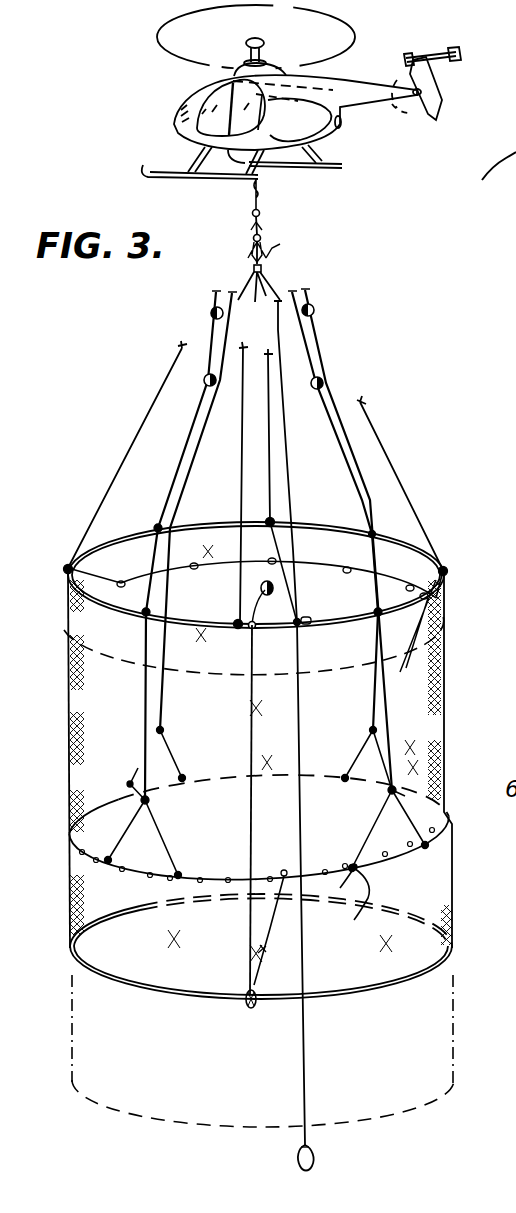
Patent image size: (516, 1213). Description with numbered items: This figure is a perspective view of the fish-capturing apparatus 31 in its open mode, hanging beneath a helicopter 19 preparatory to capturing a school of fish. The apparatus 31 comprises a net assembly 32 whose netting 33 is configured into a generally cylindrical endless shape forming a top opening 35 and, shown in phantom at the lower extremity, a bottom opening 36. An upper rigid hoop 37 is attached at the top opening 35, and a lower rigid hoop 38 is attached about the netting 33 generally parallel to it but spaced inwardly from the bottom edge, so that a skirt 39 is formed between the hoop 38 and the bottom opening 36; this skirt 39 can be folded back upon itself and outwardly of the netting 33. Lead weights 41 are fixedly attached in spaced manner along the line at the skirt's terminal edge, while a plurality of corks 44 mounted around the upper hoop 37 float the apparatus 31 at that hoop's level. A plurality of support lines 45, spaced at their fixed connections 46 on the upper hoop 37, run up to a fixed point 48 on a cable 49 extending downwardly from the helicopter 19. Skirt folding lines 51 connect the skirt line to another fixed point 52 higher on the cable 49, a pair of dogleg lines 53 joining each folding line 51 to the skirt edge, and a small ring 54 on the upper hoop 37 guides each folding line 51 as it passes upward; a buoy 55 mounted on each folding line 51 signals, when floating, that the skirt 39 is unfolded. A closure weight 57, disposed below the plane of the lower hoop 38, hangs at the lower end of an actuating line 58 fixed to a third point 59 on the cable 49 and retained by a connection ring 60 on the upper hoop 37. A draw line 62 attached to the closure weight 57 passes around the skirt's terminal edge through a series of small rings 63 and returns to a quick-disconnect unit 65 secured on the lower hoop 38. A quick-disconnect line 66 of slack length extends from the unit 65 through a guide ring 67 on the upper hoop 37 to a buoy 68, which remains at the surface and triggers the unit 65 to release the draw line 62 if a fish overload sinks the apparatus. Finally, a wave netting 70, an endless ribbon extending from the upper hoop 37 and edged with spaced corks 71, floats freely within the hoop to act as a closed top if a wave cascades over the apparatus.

The helicopter 19 is at (176, 123).
The apparatus 31 is at (410, 460).
The net assembly 32 is at (424, 714).
The netting 33 is at (72, 690).
The top opening 35 is at (122, 564).
The bottom opening 36 is at (205, 1125).
The upper rigid hoop 37 is at (76, 625).
The lower rigid hoop 38 is at (122, 988).
The skirt 39 is at (76, 921).
The lead weights 41 is at (76, 840).
The corks 44 is at (414, 640).
The support lines 45 is at (240, 275).
The fixed connections 46 is at (66, 572).
The fixed point 48 is at (266, 269).
The cable 49 is at (270, 205).
The skirt folding lines 51 is at (270, 246).
The fixed point 52 is at (252, 241).
The dogleg lines 53 is at (160, 745).
The small ring 54 is at (155, 528).
The buoy 55 is at (211, 312).
The closure weight 57 is at (314, 1158).
The actuating line 58 is at (262, 224).
The third point 59 is at (250, 214).
The connection ring 60 is at (300, 628).
The draw line 62 is at (262, 912).
The small rings 63 is at (358, 906).
The quick-disconnect unit 65 is at (242, 1011).
The quick-disconnect line 66 is at (248, 806).
The guide ring 67 is at (252, 628).
The buoy 68 is at (278, 591).
The wave netting 70 is at (210, 570).
The corks 71 is at (194, 574).